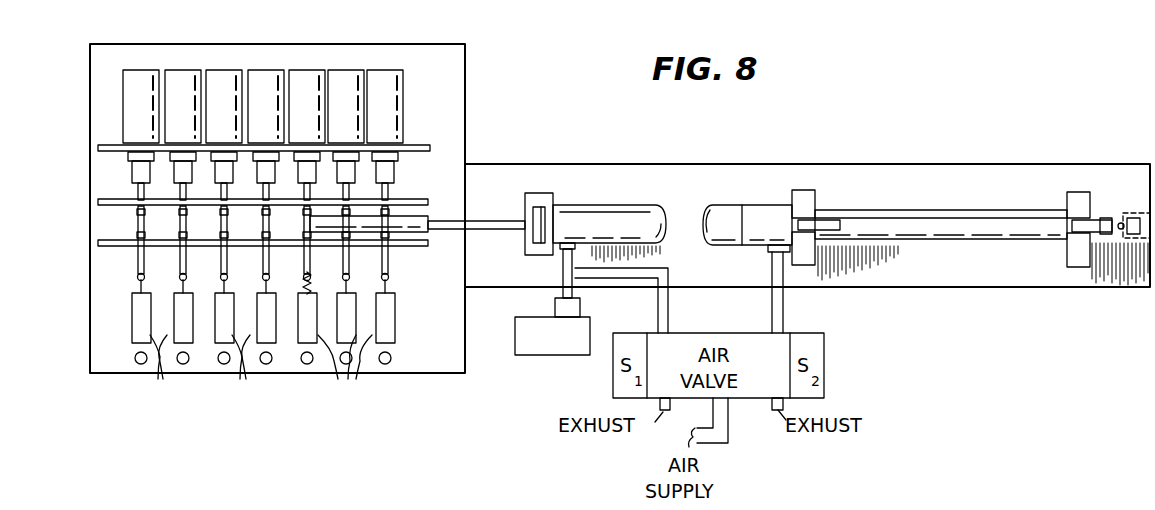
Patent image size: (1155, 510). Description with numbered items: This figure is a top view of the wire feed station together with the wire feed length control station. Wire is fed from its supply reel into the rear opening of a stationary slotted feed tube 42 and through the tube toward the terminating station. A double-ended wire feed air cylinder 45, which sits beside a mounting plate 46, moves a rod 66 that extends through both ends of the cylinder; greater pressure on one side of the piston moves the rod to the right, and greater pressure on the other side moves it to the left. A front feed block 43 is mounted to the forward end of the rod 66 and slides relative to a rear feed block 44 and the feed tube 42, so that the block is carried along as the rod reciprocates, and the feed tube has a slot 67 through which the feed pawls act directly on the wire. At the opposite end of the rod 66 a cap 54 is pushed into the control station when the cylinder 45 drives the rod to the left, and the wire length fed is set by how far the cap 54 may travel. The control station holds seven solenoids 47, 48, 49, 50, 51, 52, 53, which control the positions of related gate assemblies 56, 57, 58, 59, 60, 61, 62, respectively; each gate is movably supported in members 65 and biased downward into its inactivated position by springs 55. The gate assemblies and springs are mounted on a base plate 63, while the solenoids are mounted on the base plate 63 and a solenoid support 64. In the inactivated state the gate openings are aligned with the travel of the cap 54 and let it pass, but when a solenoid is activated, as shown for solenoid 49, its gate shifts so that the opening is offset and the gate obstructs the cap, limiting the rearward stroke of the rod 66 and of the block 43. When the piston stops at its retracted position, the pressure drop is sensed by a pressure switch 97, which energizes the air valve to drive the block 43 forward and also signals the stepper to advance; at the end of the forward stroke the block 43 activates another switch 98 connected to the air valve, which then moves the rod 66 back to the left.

The feed tube 42 is at (945, 242).
The front feed block 43 is at (1067, 190).
The rear feed block 44 is at (815, 204).
The wire feed double-ended air cylinder 45 is at (598, 218).
The mounting plate 46 is at (540, 250).
The solenoid 47 is at (397, 60).
The solenoid 48 is at (358, 60).
The solenoid 49 is at (319, 60).
The solenoid 50 is at (278, 60).
The solenoid 51 is at (236, 60).
The solenoid 52 is at (195, 60).
The solenoid 53 is at (153, 60).
The cap 54 is at (416, 221).
The springs 55 is at (261, 369).
The gate assembly 56 is at (395, 255).
The gate assembly 57 is at (356, 255).
The gate assembly 58 is at (317, 255).
The gate assembly 59 is at (276, 255).
The gate assembly 60 is at (234, 255).
The gate assembly 61 is at (193, 255).
The gate assembly 62 is at (151, 255).
The base plate 63 is at (468, 90).
The solenoid support 64 is at (418, 149).
The members 65 is at (100, 203).
The rod 66 is at (478, 221).
The slot 67 is at (912, 211).
The pressure switch 97 is at (530, 357).
The switch 98 is at (1143, 209).